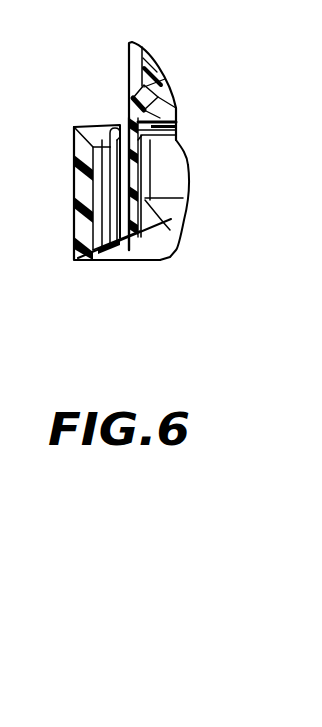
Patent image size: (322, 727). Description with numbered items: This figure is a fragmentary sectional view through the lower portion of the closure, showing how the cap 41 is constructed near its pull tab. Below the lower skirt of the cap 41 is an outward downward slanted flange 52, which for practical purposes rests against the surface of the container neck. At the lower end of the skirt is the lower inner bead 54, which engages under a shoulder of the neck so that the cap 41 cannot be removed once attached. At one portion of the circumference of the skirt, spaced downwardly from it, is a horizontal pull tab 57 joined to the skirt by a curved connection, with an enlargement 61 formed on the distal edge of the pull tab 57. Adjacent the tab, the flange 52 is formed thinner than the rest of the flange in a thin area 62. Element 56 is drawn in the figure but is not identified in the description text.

The cap 41 is at (195, 100).
The outward downward slanted flange 52 is at (158, 248).
The lower inner bead 54 is at (164, 218).
The clamp 56 is at (143, 176).
The pull tab 57 is at (78, 183).
The enlargement 61 is at (112, 147).
The thin area 62 is at (127, 252).